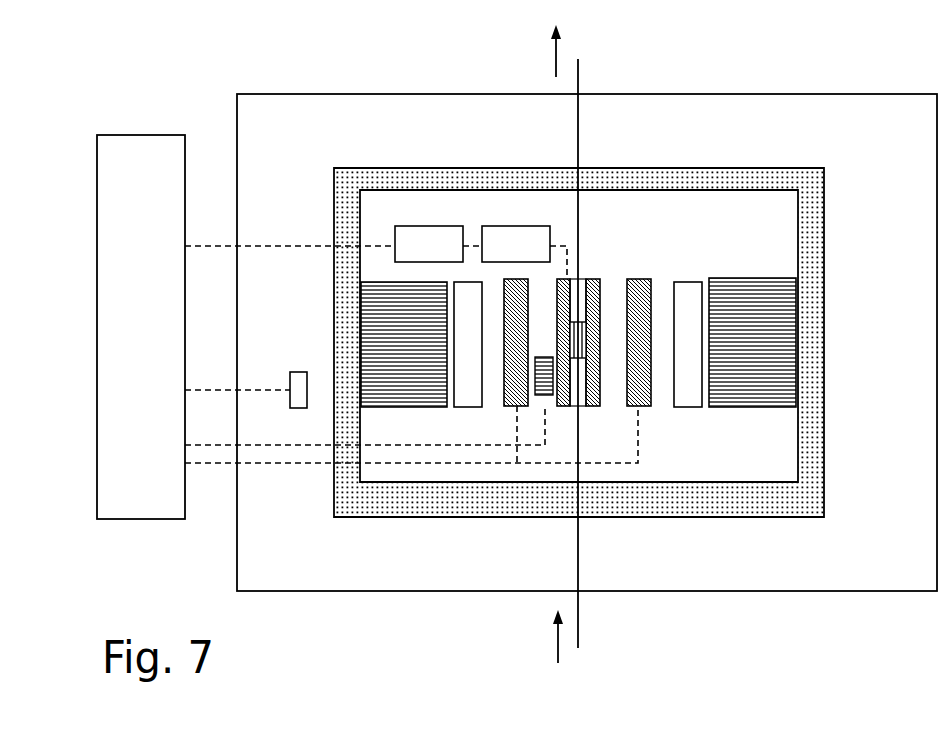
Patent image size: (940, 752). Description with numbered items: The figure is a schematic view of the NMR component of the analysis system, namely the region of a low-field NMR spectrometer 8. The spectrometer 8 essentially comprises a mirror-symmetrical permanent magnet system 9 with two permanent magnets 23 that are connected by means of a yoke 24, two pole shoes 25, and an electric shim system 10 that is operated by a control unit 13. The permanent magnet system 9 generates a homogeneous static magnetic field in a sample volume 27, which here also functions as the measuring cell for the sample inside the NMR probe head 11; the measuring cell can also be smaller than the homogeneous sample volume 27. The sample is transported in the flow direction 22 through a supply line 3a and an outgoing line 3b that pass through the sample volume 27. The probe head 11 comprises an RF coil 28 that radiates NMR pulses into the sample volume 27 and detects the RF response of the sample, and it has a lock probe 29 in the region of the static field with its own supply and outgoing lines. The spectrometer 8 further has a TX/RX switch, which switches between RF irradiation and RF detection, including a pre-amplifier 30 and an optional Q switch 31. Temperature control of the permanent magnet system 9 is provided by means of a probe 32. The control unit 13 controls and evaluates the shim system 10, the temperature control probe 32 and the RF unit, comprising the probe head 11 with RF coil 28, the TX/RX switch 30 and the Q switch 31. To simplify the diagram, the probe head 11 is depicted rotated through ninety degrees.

The supply line 3a is at (580, 617).
The outgoing line 3b is at (578, 123).
The low-field NMR spectrometer 8 is at (822, 564).
The permanent magnet system 9 is at (614, 350).
The electric shim system 10 is at (638, 297).
The NMR probe head 11 is at (588, 430).
The control unit 13 is at (141, 327).
The flow direction 22 is at (544, 636).
The permanent magnets 23 is at (773, 300).
The yoke 24 is at (810, 345).
The pole shoes 25 is at (688, 297).
The sample volume 27 is at (575, 345).
The RF coil 28 is at (613, 350).
The lock probe 29 is at (543, 383).
The pre-amplifier 30 is at (429, 244).
The Q switch 31 is at (516, 244).
The probe 32 is at (298, 380).